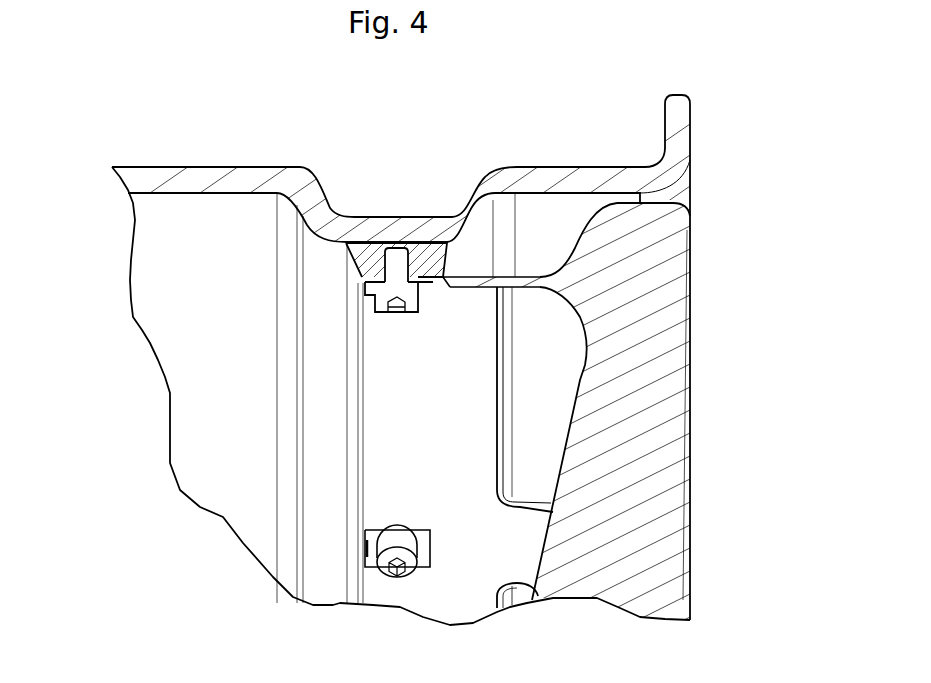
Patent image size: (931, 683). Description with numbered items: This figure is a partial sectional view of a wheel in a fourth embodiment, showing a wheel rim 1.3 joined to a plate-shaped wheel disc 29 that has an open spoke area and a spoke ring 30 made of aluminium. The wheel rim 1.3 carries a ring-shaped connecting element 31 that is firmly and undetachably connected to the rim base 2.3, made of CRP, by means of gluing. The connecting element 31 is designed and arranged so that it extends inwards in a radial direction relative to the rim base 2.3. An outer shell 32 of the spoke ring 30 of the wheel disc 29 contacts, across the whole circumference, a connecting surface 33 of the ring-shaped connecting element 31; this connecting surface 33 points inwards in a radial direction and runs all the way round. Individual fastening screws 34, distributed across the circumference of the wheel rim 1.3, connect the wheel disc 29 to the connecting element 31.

The wheel rim 1.3 is at (707, 93).
The rim base 2.3 is at (260, 167).
The wheel disc 29 is at (658, 395).
The spoke ring 30 is at (458, 407).
The ring-shaped connecting element 31 is at (357, 258).
The outer shell 32 is at (466, 275).
The connecting surface 33 is at (363, 278).
The fastening screws 34 is at (385, 317).